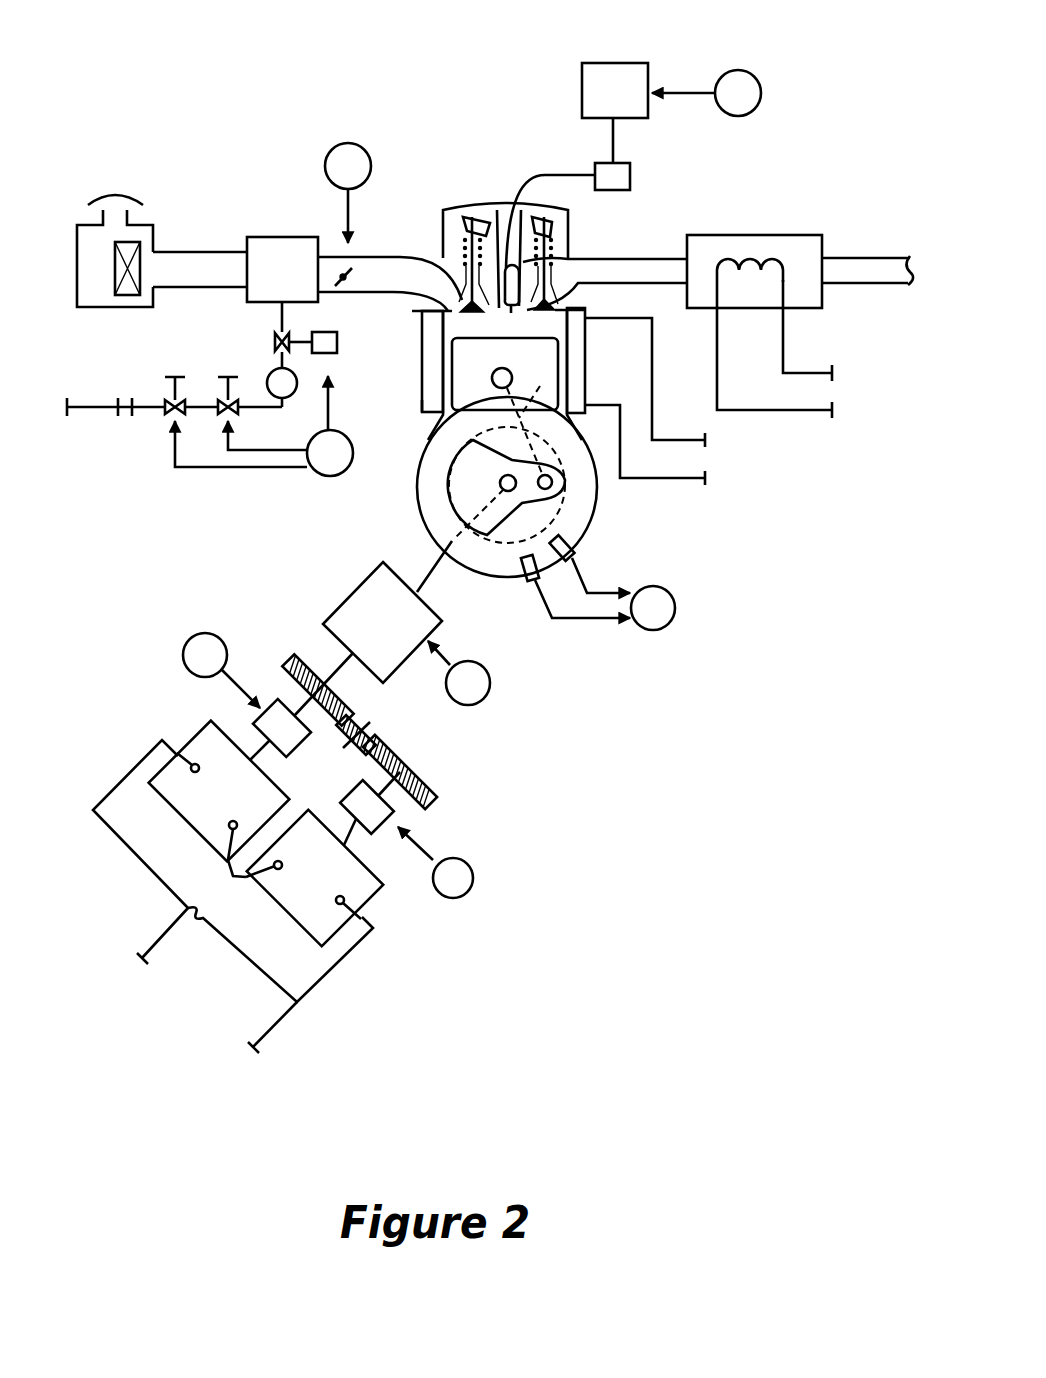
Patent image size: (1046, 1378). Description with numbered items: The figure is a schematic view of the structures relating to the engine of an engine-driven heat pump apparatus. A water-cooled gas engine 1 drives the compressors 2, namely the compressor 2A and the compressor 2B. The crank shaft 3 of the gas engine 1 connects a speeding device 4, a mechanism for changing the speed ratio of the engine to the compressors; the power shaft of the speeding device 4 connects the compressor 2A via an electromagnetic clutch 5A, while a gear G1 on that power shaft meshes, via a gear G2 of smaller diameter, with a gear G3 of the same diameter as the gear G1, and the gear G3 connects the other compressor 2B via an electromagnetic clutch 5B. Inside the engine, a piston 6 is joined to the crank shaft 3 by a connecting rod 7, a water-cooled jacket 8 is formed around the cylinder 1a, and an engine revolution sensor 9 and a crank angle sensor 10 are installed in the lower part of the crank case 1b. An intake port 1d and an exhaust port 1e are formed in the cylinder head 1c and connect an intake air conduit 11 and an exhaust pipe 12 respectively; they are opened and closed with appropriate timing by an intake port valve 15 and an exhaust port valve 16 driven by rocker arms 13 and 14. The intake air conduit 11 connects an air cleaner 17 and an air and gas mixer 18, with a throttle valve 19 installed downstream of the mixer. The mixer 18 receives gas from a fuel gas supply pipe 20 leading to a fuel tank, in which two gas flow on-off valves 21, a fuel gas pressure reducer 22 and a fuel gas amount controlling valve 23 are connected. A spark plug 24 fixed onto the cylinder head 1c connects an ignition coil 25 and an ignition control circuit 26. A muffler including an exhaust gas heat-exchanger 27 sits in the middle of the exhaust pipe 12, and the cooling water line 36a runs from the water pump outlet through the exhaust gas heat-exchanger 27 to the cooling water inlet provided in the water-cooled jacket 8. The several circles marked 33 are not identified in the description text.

The gas engine 1 is at (440, 163).
The cylinder 1a is at (570, 333).
The crank case 1b is at (593, 517).
The cylinder head 1c is at (603, 243).
The intake port 1d is at (467, 276).
The exhaust port 1e is at (560, 285).
The compressors 2 is at (257, 872).
The compressor 2A is at (197, 745).
The compressor 2B is at (363, 893).
The crank shaft 3 is at (500, 483).
The speeding device 4 is at (357, 598).
The electromagnetic clutch 5A is at (268, 703).
The electromagnetic clutch 5B is at (382, 825).
The piston 6 is at (463, 402).
The connecting rod 7 is at (517, 416).
The water-cooled jacket 8 is at (420, 405).
The engine revolution sensor 9 is at (518, 578).
The crank angle sensor 10 is at (575, 557).
The intake air conduit 11 is at (200, 251).
The exhaust pipe 12 is at (852, 258).
The rocker arm 13 is at (475, 213).
The rocker arm 14 is at (540, 222).
The intake port valve 15 is at (440, 366).
The exhaust port valve 16 is at (543, 307).
The air cleaner 17 is at (115, 308).
The air and gas mixer 18 is at (277, 236).
The throttle valve 19 is at (362, 237).
The fuel gas supply pipe 20 is at (143, 410).
The gas flow on-off valves 21 is at (228, 375).
The fuel gas pressure reducer 22 is at (272, 378).
The fuel gas amount controlling valve 23 is at (337, 345).
The spark plug 24 is at (507, 268).
The ignition coil 25 is at (632, 175).
The ignition control circuit 26 is at (615, 67).
The exhaust gas heat-exchanger 27 is at (778, 233).
The controller 33 is at (347, 148).
The cooling water line 36a is at (690, 480).
The gear G1 is at (313, 667).
The gear G2 is at (372, 737).
The gear G3 is at (433, 780).